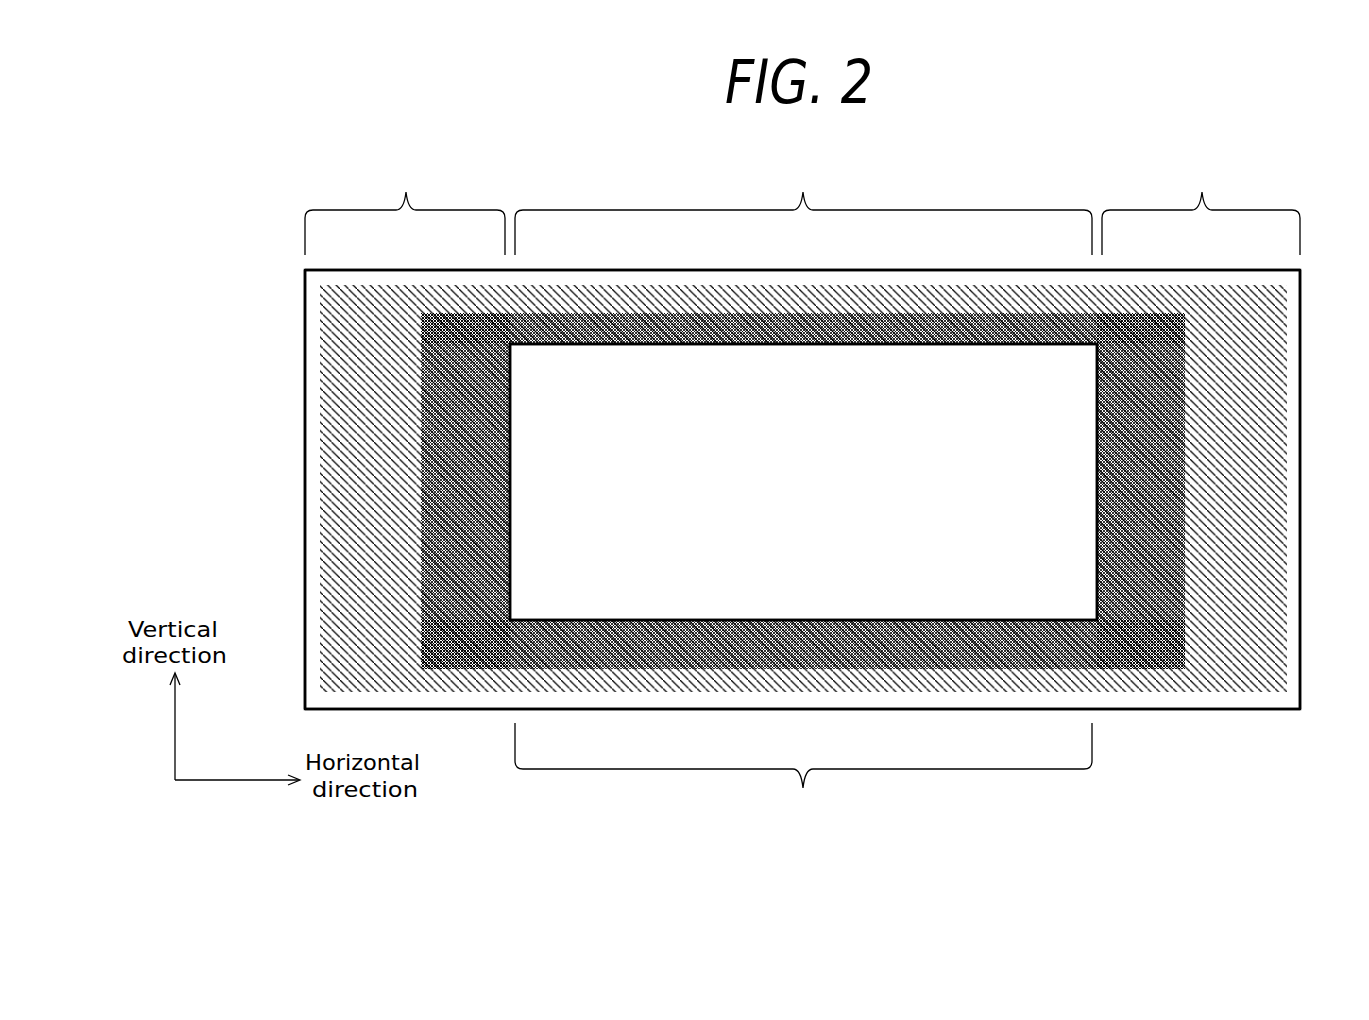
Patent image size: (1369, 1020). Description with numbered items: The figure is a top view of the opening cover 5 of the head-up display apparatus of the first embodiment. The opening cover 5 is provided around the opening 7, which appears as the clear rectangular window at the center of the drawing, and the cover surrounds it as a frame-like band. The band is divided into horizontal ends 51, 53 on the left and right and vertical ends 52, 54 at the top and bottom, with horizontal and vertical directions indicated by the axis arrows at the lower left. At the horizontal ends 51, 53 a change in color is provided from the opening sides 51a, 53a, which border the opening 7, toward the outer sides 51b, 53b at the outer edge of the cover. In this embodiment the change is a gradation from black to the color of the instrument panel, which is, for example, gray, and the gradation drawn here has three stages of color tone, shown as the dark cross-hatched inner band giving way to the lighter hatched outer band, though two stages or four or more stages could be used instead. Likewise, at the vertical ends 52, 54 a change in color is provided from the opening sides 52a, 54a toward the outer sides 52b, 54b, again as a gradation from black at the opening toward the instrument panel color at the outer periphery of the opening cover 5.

The opening cover 5 is at (1300, 313).
The opening 7 is at (804, 493).
The horizontal end 51 is at (407, 416).
The opening side 51a is at (511, 482).
The outer side 51b is at (305, 480).
The vertical end 52 is at (803, 254).
The opening side 52a is at (800, 345).
The outer side 52b is at (803, 270).
The horizontal end 53 is at (1198, 416).
The opening side 53a is at (1097, 484).
The outer side 53b is at (1301, 483).
The vertical end 54 is at (803, 719).
The opening side 54a is at (799, 620).
The outer side 54b is at (833, 709).